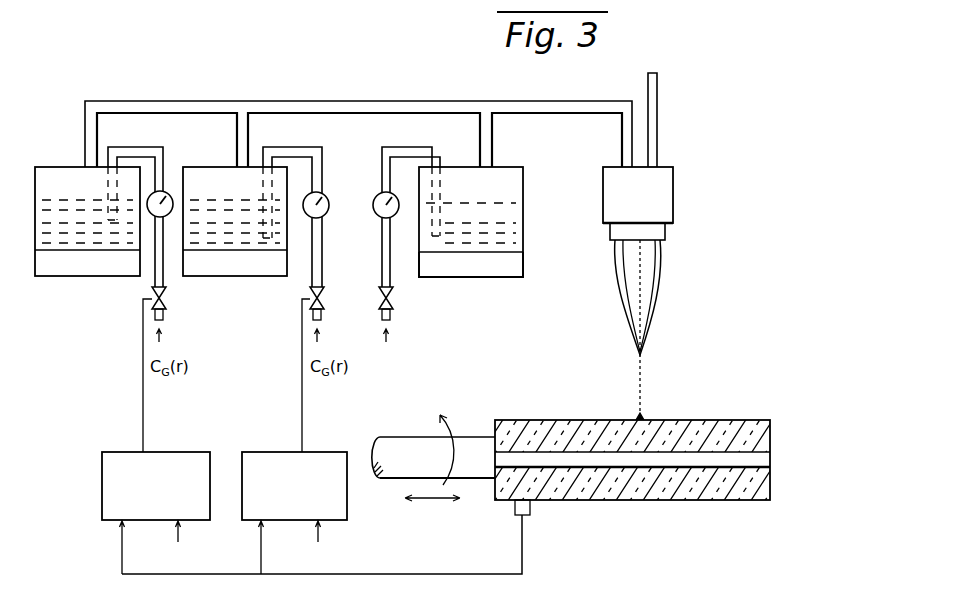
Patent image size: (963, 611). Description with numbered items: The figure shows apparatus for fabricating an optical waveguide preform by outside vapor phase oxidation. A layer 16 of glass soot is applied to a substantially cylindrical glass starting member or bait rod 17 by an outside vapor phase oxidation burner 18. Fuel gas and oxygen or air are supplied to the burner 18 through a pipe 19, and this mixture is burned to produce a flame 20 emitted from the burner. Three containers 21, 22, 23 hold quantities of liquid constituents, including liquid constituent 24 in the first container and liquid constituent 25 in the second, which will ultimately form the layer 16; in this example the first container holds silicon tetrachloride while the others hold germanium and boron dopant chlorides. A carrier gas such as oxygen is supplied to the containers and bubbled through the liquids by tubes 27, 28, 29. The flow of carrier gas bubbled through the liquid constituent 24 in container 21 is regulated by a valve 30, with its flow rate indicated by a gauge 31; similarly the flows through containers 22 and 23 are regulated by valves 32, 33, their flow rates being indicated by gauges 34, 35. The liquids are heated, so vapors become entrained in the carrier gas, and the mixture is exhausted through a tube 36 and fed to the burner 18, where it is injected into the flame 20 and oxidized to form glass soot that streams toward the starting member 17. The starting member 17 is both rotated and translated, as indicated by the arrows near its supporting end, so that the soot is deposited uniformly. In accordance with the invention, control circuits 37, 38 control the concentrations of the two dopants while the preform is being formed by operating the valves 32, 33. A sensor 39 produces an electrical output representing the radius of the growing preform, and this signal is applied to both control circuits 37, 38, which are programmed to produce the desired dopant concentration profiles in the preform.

The layer of glass soot 16 is at (708, 420).
The starting member 17 is at (771, 458).
The outside vapor phase oxidation burner 18 is at (673, 213).
The pipe 19 is at (657, 108).
The flame 20 is at (658, 302).
The container 21 is at (523, 265).
The container 22 is at (247, 277).
The container 23 is at (97, 277).
The liquid constituent 24 is at (523, 218).
The liquid constituent 25 is at (288, 245).
The tube 27 is at (410, 147).
The tube 28 is at (295, 147).
The tube 29 is at (150, 147).
The valve 30 is at (394, 300).
The gauge 31 is at (379, 216).
The valve 32 is at (324, 298).
The valve 33 is at (166, 294).
The gauge 34 is at (323, 193).
The gauge 35 is at (167, 191).
The tube or pipe 36 is at (434, 100).
The control circuit 37 is at (188, 452).
The control circuit 38 is at (323, 452).
The sensor 39 is at (531, 512).